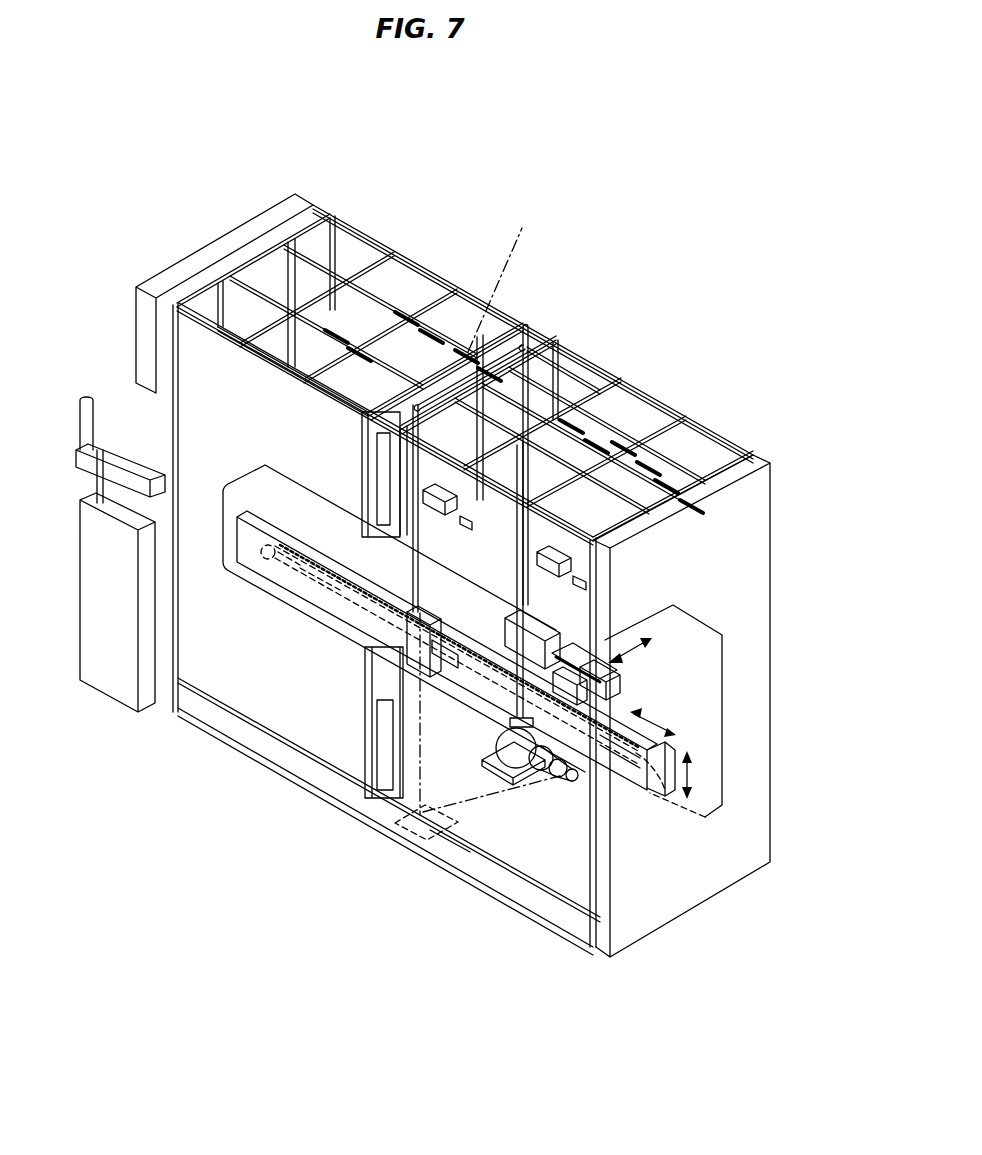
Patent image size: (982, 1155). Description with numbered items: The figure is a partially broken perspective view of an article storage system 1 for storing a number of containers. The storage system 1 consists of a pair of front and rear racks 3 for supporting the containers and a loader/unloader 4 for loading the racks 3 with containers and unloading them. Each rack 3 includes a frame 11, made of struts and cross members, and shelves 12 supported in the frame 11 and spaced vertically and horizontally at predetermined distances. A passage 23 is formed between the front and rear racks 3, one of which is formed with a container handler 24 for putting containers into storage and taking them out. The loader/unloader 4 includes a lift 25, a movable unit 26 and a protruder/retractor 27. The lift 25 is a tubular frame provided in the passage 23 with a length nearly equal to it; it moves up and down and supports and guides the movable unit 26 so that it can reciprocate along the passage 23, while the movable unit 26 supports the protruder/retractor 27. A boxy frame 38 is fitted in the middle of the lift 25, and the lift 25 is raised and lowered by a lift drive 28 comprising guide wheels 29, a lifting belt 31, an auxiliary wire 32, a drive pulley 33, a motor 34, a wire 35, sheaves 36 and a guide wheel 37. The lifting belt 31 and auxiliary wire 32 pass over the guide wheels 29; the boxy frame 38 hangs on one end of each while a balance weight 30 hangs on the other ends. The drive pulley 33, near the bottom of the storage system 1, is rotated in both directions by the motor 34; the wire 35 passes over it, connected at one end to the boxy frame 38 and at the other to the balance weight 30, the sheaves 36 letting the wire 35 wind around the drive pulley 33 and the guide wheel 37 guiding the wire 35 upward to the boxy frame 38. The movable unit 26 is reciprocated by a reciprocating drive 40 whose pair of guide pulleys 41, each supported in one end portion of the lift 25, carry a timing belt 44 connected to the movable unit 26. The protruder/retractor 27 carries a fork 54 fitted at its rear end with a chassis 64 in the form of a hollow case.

The article storage system 1 is at (243, 219).
The rack 3 is at (245, 317).
The loader/unloader 4 is at (615, 790).
The frame 11 is at (261, 291).
The shelves 12 is at (362, 301).
The passage 23 is at (307, 283).
The container handler 24 is at (428, 475).
The lift 25 is at (680, 752).
The movable unit 26 is at (617, 700).
The protruder/retractor 27 is at (628, 668).
The lift drive 28 is at (553, 790).
The guide wheels 29 is at (523, 327).
The balance weight 30 is at (605, 640).
The lifting belt 31 is at (517, 323).
The auxiliary wire 32 is at (507, 274).
The drive pulley 33 is at (500, 767).
The motor 34 is at (543, 778).
The wire 35 is at (500, 788).
The sheaves 36 is at (505, 727).
The guide wheel 37 is at (397, 840).
The boxy frame 38 is at (447, 613).
The reciprocating drive 40 is at (340, 602).
The guide pulleys 41 is at (265, 560).
The timing belt 44 is at (285, 603).
The fork 54 is at (612, 638).
The chassis 64 is at (621, 768).